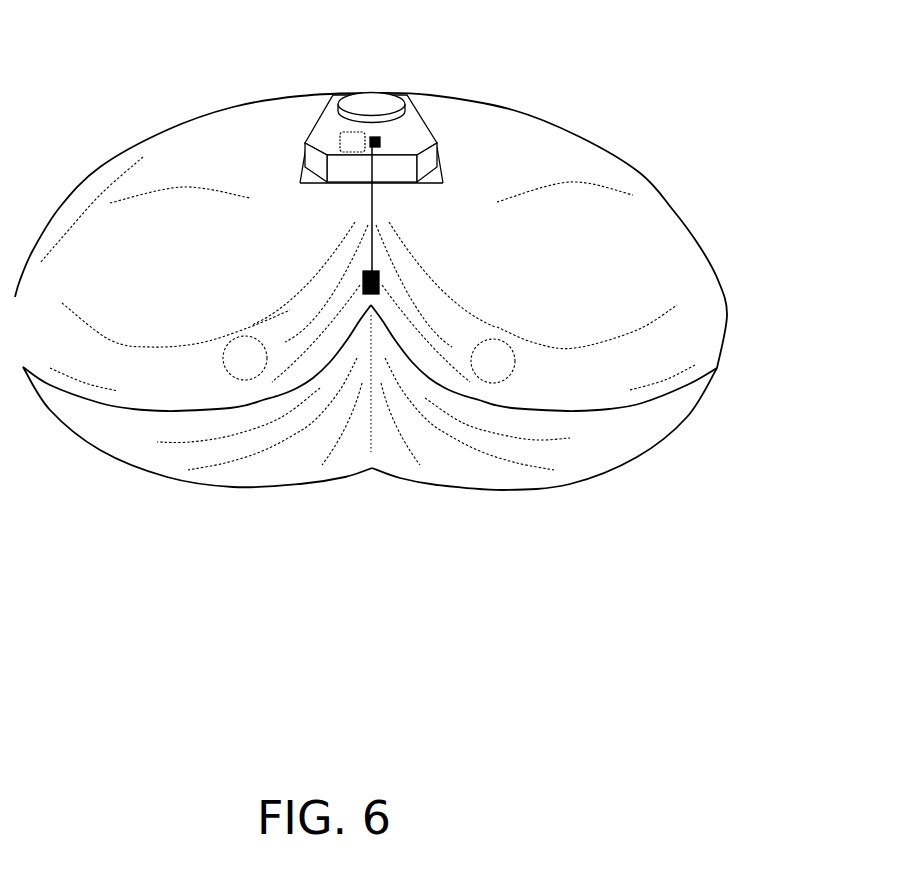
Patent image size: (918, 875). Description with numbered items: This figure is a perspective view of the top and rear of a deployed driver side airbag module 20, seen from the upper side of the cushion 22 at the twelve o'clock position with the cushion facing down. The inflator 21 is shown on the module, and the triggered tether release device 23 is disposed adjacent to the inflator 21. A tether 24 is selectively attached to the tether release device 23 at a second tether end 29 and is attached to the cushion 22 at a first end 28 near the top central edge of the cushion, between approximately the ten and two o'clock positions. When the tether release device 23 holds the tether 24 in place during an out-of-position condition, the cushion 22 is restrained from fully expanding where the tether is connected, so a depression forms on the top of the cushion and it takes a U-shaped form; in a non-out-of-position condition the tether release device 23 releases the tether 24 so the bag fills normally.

The driver side airbag module 20 is at (448, 137).
The inflator 21 is at (368, 97).
The cushion 22 is at (185, 145).
The tether release device 23 is at (338, 140).
The tether 24 is at (363, 205).
The first end 28 is at (379, 273).
The second tether end 29 is at (377, 138).